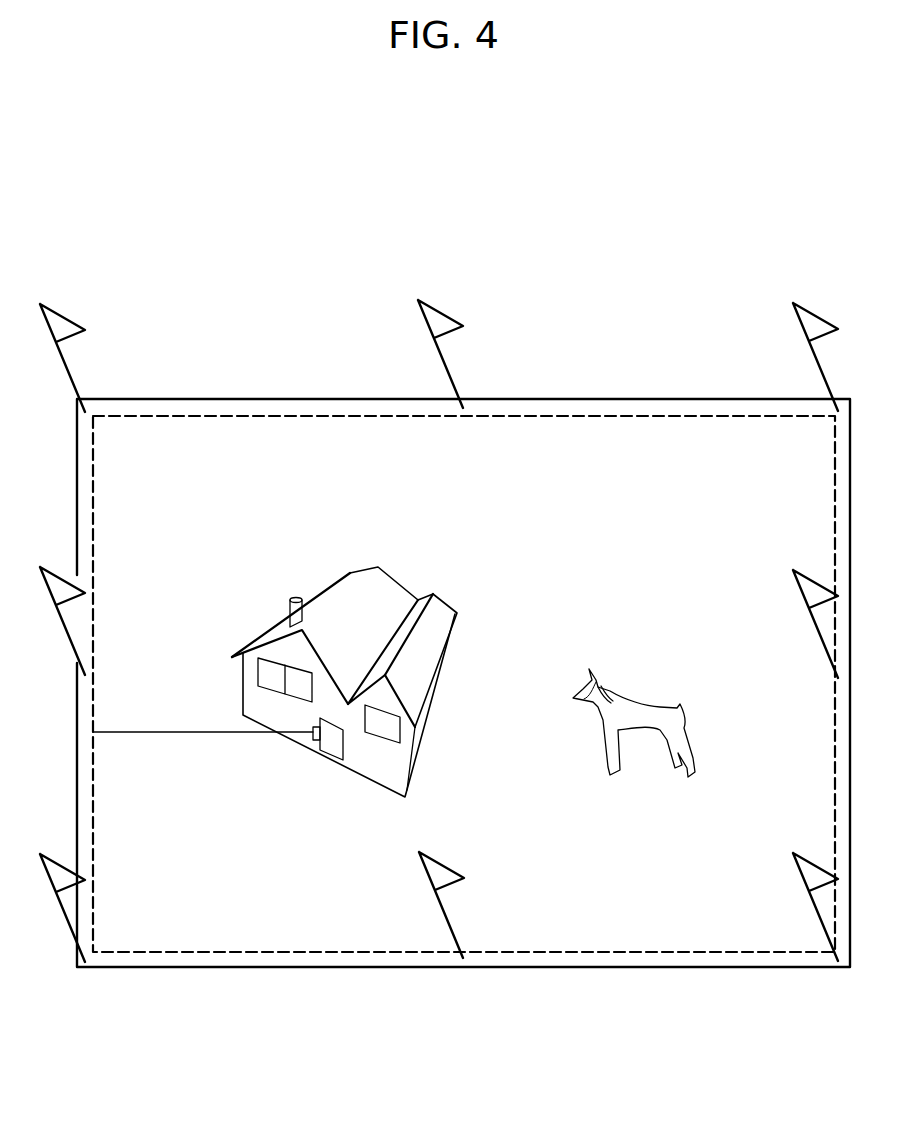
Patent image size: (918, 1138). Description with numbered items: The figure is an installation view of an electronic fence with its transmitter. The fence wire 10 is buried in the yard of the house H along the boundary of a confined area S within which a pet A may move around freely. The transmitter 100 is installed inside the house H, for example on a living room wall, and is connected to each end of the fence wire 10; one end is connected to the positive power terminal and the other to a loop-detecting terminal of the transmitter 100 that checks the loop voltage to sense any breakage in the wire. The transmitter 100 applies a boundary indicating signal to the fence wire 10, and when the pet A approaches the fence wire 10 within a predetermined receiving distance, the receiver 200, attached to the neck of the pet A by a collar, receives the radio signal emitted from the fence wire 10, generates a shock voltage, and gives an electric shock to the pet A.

The fence wire 10 is at (572, 417).
The house H is at (332, 592).
The transmitter 100 is at (310, 742).
The receiver 200 is at (612, 688).
The pet A is at (640, 730).
The confined area S is at (585, 580).